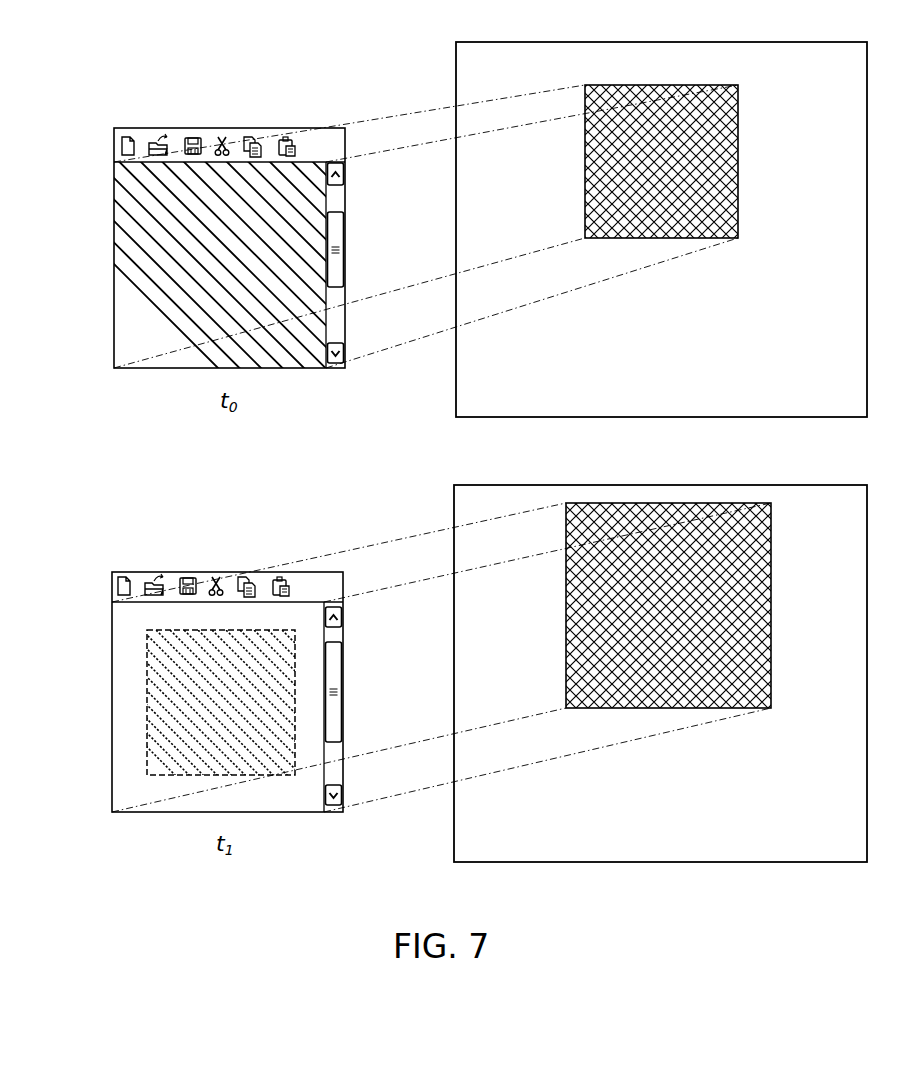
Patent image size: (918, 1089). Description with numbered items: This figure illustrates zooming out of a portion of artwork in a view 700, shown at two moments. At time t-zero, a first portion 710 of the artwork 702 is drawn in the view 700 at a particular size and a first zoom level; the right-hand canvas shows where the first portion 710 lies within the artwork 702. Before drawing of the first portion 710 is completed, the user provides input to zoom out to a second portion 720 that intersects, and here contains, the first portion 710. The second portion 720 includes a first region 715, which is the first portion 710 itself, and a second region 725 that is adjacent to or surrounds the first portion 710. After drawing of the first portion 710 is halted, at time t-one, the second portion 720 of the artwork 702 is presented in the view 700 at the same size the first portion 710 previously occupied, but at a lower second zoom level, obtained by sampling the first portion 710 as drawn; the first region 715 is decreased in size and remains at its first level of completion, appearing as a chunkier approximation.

The view 700 is at (99, 140).
The artwork 702 is at (852, 412).
The first portion 710 is at (756, 85).
The first region 715 is at (243, 272).
The second portion 720 is at (784, 503).
The second region 725 is at (318, 805).